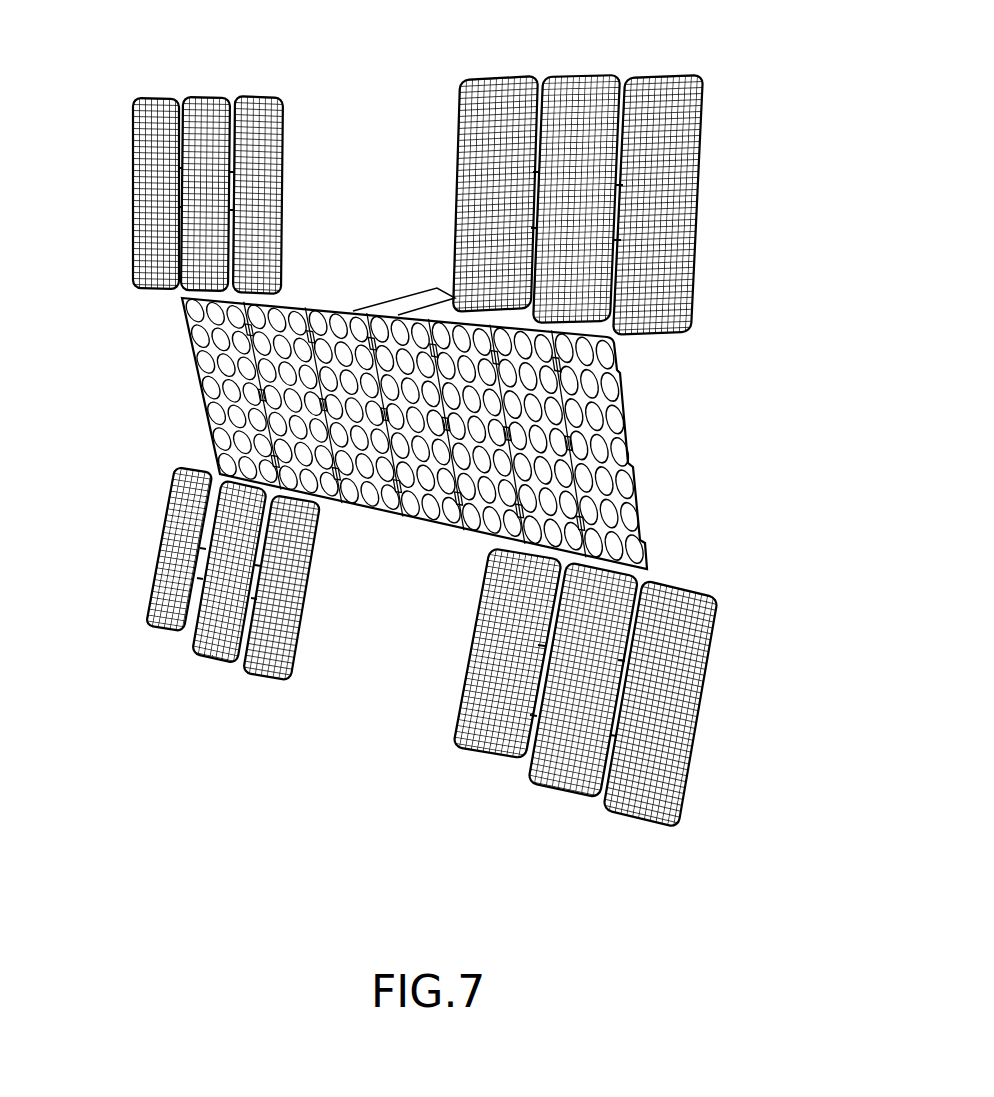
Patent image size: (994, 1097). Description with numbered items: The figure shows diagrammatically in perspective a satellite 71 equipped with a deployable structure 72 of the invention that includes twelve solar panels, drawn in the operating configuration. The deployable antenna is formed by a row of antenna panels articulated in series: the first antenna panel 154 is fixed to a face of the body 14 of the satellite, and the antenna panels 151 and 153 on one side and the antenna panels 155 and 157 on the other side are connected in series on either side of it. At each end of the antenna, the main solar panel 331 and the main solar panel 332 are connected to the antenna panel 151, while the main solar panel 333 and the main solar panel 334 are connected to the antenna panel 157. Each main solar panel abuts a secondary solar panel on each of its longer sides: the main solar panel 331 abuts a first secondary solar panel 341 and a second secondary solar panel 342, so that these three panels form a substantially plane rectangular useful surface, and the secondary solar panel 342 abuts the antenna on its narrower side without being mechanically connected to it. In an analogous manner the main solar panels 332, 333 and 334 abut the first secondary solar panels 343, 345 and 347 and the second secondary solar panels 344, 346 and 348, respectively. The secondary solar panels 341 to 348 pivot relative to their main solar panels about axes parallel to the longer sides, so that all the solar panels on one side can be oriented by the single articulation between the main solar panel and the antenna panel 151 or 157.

The body 14 is at (426, 384).
The satellite 71 is at (393, 120).
The deployable structure 72 is at (776, 300).
The antenna panel 151 is at (192, 378).
The antenna panel 153 is at (322, 306).
The first antenna panel 154 is at (395, 515).
The antenna panel 155 is at (470, 528).
The antenna panel 157 is at (636, 482).
The main solar panel 331 is at (212, 650).
The main solar panel 332 is at (200, 115).
The main solar panel 333 is at (553, 779).
The main solar panel 334 is at (582, 95).
The first secondary solar panel 341 is at (167, 592).
The second secondary solar panel 342 is at (270, 668).
The first secondary solar panel 343 is at (153, 148).
The second secondary solar panel 344 is at (266, 118).
The first secondary solar panel 345 is at (477, 752).
The second secondary solar panel 346 is at (642, 813).
The first secondary solar panel 347 is at (490, 90).
The second secondary solar panel 348 is at (675, 92).